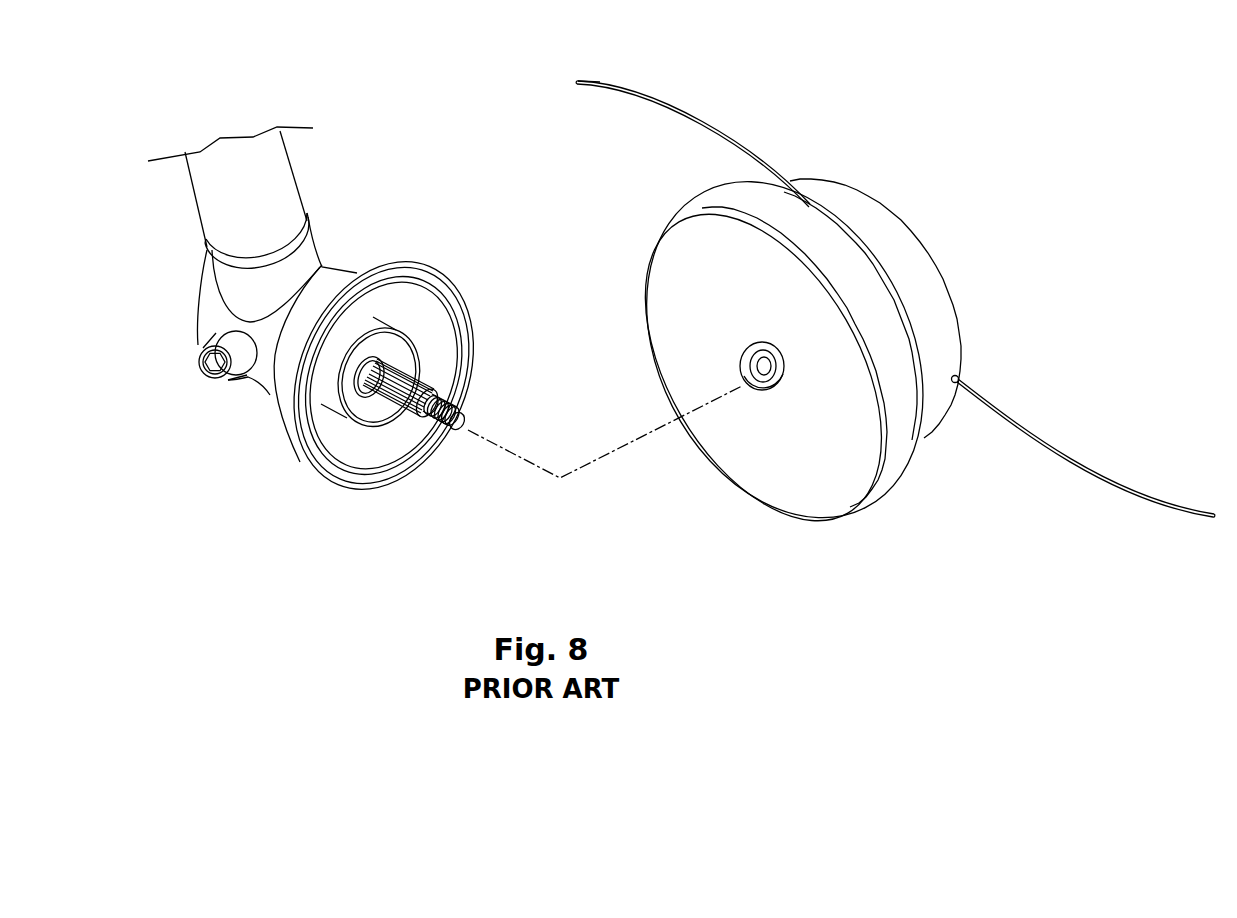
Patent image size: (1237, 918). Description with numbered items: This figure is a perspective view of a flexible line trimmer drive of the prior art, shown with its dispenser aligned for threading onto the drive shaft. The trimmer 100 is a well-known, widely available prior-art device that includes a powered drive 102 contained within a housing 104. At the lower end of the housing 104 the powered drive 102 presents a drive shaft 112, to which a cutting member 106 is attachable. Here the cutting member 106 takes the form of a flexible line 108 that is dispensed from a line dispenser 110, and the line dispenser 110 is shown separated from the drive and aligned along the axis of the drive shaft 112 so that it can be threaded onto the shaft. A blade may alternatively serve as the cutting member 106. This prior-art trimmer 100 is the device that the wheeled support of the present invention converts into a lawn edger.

The trimmer 100 is at (177, 443).
The powered drive 102 is at (420, 253).
The housing 104 is at (303, 412).
The cutting member 106 is at (628, 89).
The flexible line 108 is at (631, 101).
The line dispenser 110 is at (731, 465).
The drive shaft 112 is at (467, 409).